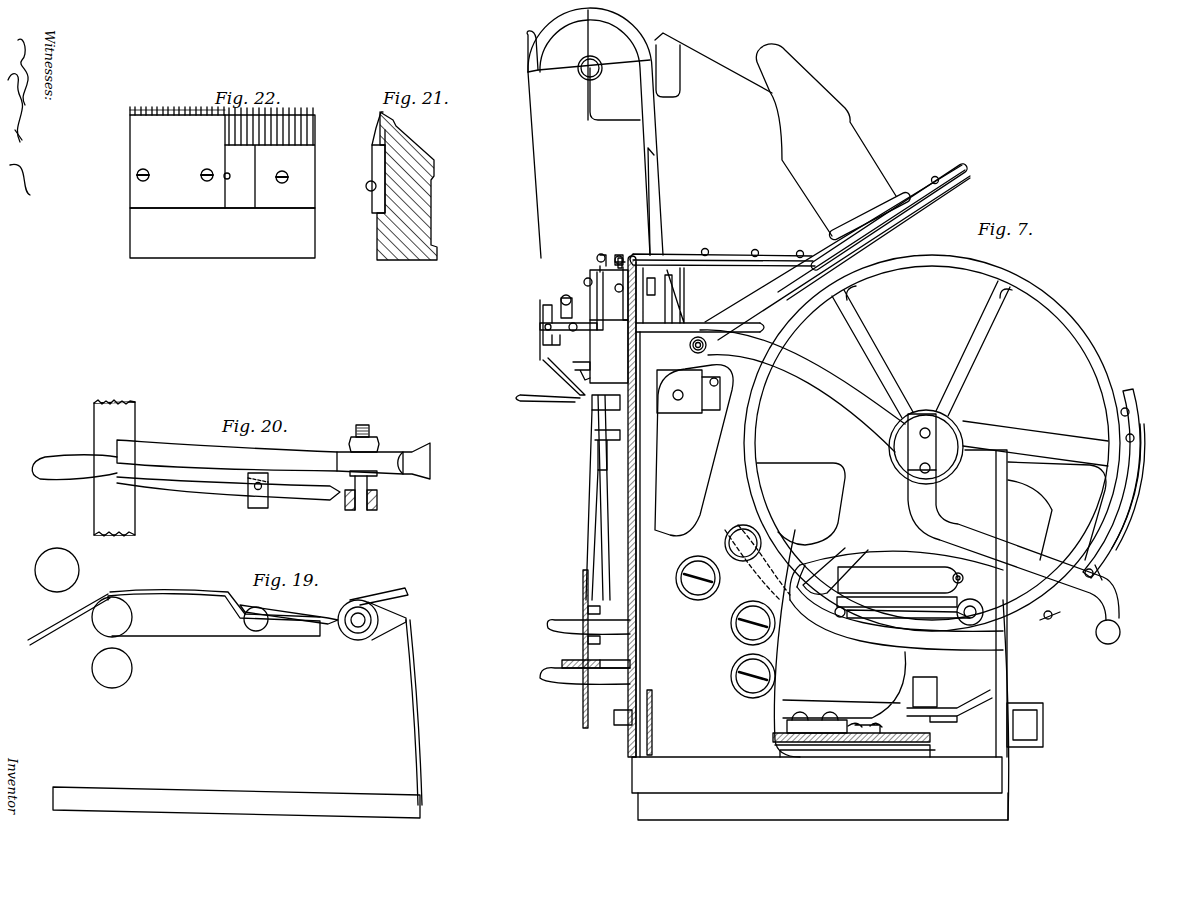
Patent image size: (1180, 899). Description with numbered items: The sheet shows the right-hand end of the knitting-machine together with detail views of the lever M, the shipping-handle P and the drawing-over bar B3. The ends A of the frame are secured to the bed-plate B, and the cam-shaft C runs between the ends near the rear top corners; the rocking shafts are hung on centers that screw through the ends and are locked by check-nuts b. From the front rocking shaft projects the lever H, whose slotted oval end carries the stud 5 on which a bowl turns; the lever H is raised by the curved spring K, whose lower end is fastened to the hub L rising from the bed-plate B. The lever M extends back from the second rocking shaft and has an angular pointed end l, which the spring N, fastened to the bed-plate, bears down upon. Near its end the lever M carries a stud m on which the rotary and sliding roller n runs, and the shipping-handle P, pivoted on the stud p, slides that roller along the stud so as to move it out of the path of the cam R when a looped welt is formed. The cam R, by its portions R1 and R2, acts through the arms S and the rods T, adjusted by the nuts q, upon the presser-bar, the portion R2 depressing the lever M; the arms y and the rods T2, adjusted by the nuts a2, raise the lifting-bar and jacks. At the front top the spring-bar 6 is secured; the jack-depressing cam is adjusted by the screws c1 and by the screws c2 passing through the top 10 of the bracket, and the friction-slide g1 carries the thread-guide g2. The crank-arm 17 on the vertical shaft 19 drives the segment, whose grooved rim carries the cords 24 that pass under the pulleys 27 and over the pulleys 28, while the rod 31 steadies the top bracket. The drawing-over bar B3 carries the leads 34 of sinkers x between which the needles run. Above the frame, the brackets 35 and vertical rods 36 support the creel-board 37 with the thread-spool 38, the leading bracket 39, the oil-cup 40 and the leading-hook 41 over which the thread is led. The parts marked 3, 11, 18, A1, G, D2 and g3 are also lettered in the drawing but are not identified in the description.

In FIG. 7, the fly-wheel 3 is at (932, 452).
In FIG. 7, the stud 5 is at (958, 571).
In FIG. 7, the spring-bar 6 is at (618, 338).
In FIG. 7, the top of the bracket 10 is at (658, 280).
In FIG. 22, the gauge plate 11 is at (222, 182).
In FIG. 21, the gauge plate 11 is at (373, 162).
In FIG. 7, the crank-arm 17 is at (949, 700).
In FIG. 7, the stud 18 is at (615, 273).
In FIG. 7, the vertical shaft 19 is at (925, 692).
In FIG. 7, the cords 24 is at (625, 506).
In FIG. 7, the pulleys 27 is at (641, 722).
In FIG. 7, the pulleys 28 is at (609, 318).
In FIG. 7, the rod 31 is at (705, 346).
In FIG. 22, the leads of sinkers 34 is at (269, 158).
In FIG. 21, the leads of sinkers 34 is at (378, 186).
In FIG. 7, the brackets 35 is at (837, 252).
In FIG. 7, the vertical rods 36 is at (685, 299).
In FIG. 7, the top cover and creel-board 37 is at (799, 217).
In FIG. 7, the thread-spool 38 is at (870, 216).
In FIG. 7, the leading bracket 39 is at (596, 132).
In FIG. 7, the oil-cup 40 is at (713, 65).
In FIG. 7, the leading-hook 41 is at (585, 133).
In FIG. 7, the ends A is at (820, 541).
In FIG. 7, the frame part A1 is at (854, 748).
In FIG. 19, the bed-plate B is at (236, 802).
In FIG. 7, the bed-plate B is at (800, 808).
In FIG. 21, the drawing-over bar B3 is at (414, 186).
In FIG. 7, the cam-shaft C is at (1014, 529).
In FIG. 7, the guide G is at (694, 450).
In FIG. 7, the lever H is at (898, 580).
In FIG. 7, the curved spring K is at (847, 627).
In FIG. 7, the hub L is at (817, 723).
In FIG. 20, the lever M is at (260, 457).
In FIG. 19, the lever M is at (214, 613).
In FIG. 7, the lever M is at (904, 602).
In FIG. 20, the spring N is at (408, 461).
In FIG. 19, the spring N is at (410, 712).
In FIG. 7, the spring N is at (1025, 737).
In FIG. 20, the shipping-handle P is at (186, 477).
In FIG. 19, the shipping-handle P is at (289, 614).
In FIG. 7, the cam R is at (1057, 541).
In FIG. 7, the portion of cam R R1 is at (1120, 483).
In FIG. 7, the portion of cam R R2 is at (1102, 574).
In FIG. 7, the arms S is at (588, 627).
In FIG. 7, the rods T is at (606, 497).
In FIG. 7, the rods T2 is at (584, 505).
In FIG. 7, the nut a2 is at (581, 657).
In FIG. 7, the check-nut b is at (733, 611).
In FIG. 7, the screws c1 is at (583, 279).
In FIG. 7, the screws c2 is at (610, 259).
In FIG. 7, the bar D2 is at (615, 669).
In FIG. 7, the friction-slide g1 is at (568, 325).
In FIG. 7, the thread-guide g2 is at (551, 324).
In FIG. 7, the gripper part g3 is at (553, 376).
In FIG. 19, the angular pointed end l is at (379, 614).
In FIG. 20, the stud m is at (362, 467).
In FIG. 19, the stud m is at (358, 620).
In FIG. 7, the stud m is at (970, 612).
In FIG. 20, the bowl or roller n is at (361, 504).
In FIG. 19, the bowl or roller n is at (346, 622).
In FIG. 7, the bowl or roller n is at (962, 614).
In FIG. 20, the stud p is at (258, 497).
In FIG. 19, the stud p is at (148, 622).
In FIG. 7, the nuts q is at (596, 649).
In FIG. 22, the sinkers x is at (246, 115).
In FIG. 21, the sinkers x is at (370, 129).
In FIG. 7, the arms y is at (585, 679).